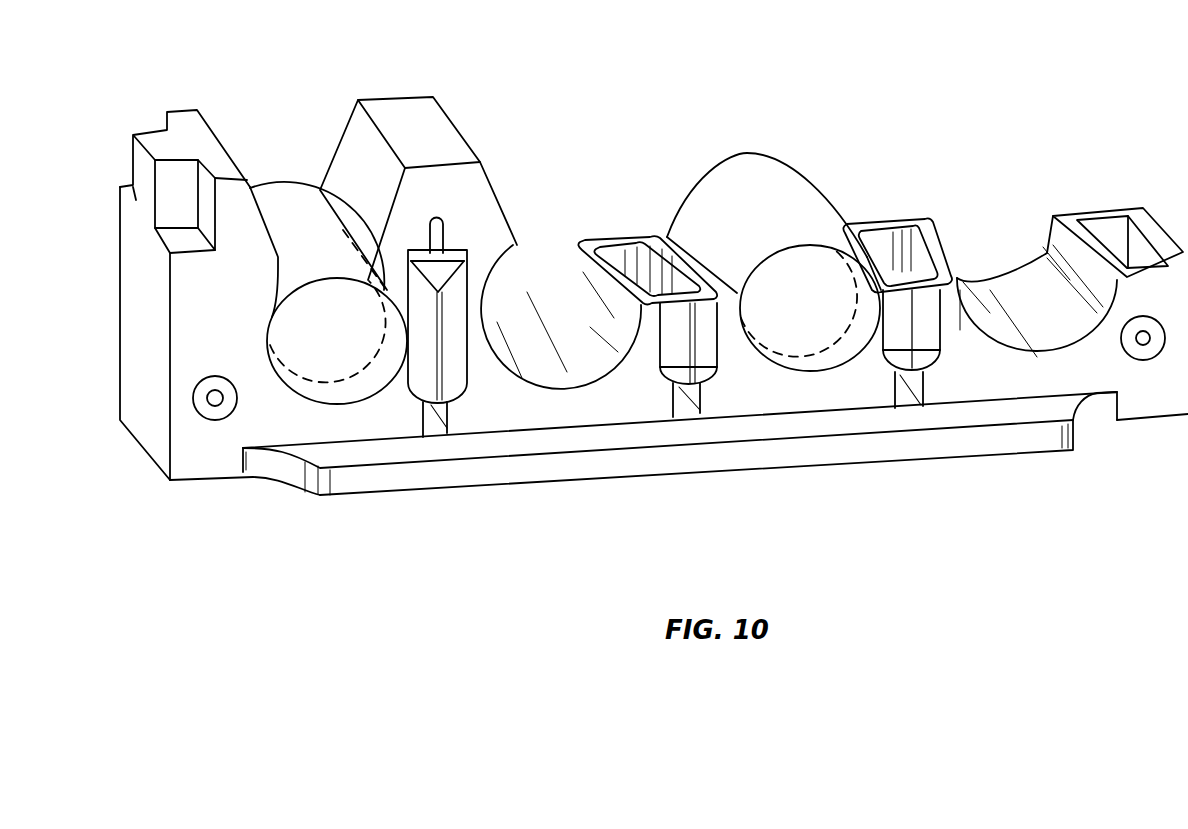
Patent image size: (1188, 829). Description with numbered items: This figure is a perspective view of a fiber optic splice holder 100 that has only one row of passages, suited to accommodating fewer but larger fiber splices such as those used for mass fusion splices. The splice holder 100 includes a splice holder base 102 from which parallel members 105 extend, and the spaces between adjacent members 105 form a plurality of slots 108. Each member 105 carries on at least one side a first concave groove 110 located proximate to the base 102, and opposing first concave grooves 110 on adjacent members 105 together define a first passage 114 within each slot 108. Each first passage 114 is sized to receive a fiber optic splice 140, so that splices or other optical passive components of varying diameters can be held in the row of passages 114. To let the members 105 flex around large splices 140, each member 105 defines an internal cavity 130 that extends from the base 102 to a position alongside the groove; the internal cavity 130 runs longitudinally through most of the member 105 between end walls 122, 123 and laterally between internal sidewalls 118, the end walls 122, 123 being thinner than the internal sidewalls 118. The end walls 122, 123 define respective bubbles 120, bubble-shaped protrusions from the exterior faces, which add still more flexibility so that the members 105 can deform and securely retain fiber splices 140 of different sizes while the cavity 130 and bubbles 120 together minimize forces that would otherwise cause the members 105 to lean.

The fiber optic splice holder 100 is at (965, 73).
The splice holder base 102 is at (660, 465).
The member 105 is at (417, 115).
The slot 108 is at (263, 122).
The first concave groove 110 is at (640, 308).
The first passage 114 is at (258, 403).
The internal sidewall 118 is at (498, 197).
The bubble 120 is at (930, 340).
The end wall 122 is at (910, 323).
The end wall 123 is at (860, 222).
The internal cavity 130 is at (636, 250).
The fiber optic splice 140 is at (322, 230).